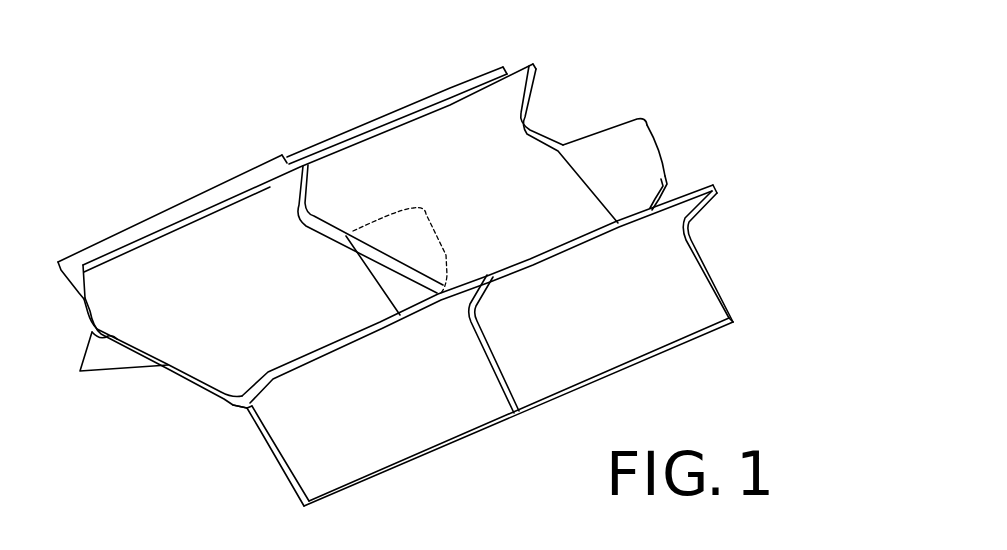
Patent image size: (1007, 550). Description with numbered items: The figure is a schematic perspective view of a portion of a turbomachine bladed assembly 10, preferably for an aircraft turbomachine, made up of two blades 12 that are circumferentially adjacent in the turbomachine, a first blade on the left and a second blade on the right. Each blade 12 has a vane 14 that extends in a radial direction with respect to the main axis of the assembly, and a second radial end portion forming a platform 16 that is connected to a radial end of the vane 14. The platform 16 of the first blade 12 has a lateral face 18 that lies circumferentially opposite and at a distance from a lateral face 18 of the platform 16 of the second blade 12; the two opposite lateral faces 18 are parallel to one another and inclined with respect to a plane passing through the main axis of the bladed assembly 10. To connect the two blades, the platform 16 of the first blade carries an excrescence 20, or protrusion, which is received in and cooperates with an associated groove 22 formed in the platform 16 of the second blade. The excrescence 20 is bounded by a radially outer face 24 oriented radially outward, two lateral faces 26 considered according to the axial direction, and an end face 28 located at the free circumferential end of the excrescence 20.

The bladed assembly 10 is at (503, 449).
The blade 12 is at (133, 201).
The vane 14 is at (114, 368).
The platform 16 is at (238, 420).
The lateral face 18 is at (232, 394).
The excrescence 20 is at (677, 119).
The groove 22 is at (187, 383).
The radially outer face 24 is at (634, 143).
The lateral face of the excrescence 26 is at (593, 131).
The end face 28 is at (663, 156).